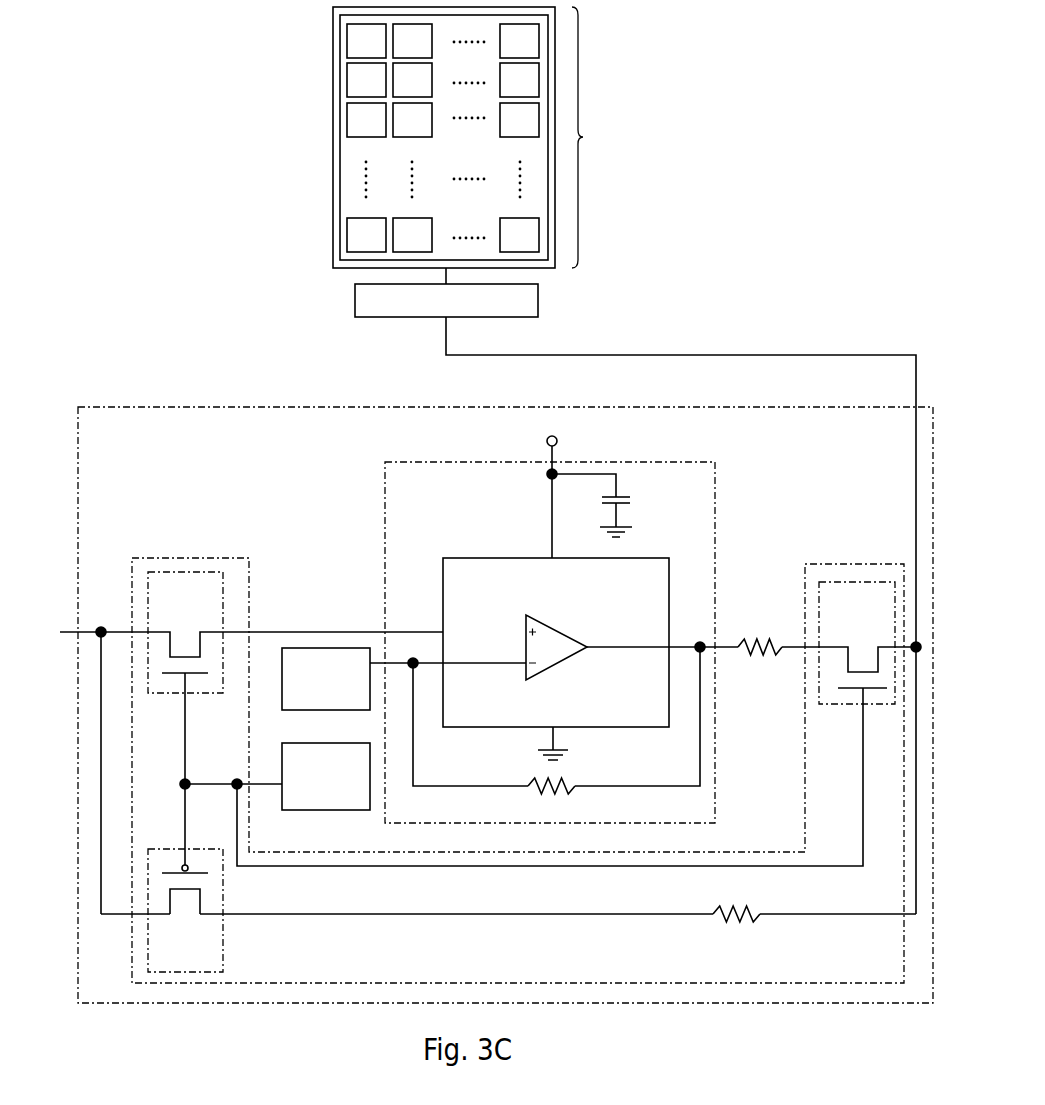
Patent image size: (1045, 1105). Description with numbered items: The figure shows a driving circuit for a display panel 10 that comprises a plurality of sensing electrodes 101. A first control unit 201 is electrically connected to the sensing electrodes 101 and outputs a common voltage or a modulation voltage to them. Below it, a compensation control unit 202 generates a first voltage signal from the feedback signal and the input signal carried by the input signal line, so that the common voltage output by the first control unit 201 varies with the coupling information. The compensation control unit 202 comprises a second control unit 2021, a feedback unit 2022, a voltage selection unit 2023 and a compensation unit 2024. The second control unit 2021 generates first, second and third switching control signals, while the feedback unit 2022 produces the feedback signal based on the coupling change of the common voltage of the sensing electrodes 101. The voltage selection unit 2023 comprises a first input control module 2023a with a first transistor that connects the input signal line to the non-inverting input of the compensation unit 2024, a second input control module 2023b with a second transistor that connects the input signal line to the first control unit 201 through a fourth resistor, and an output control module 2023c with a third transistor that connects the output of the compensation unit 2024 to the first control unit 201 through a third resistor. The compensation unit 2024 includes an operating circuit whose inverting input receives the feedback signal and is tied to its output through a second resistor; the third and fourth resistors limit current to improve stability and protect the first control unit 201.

The display panel 10 is at (446, 137).
The sensing electrodes 101 is at (353, 123).
The first control unit 201 is at (446, 300).
The compensation control unit 202 is at (126, 445).
The second control unit 2021 is at (326, 776).
The feedback unit 2022 is at (326, 679).
The voltage selection unit 2023 is at (899, 976).
The first input control module 2023a is at (206, 599).
The second input control module 2023b is at (218, 965).
The output control module 2023c is at (881, 609).
The compensation unit 2024 is at (439, 495).